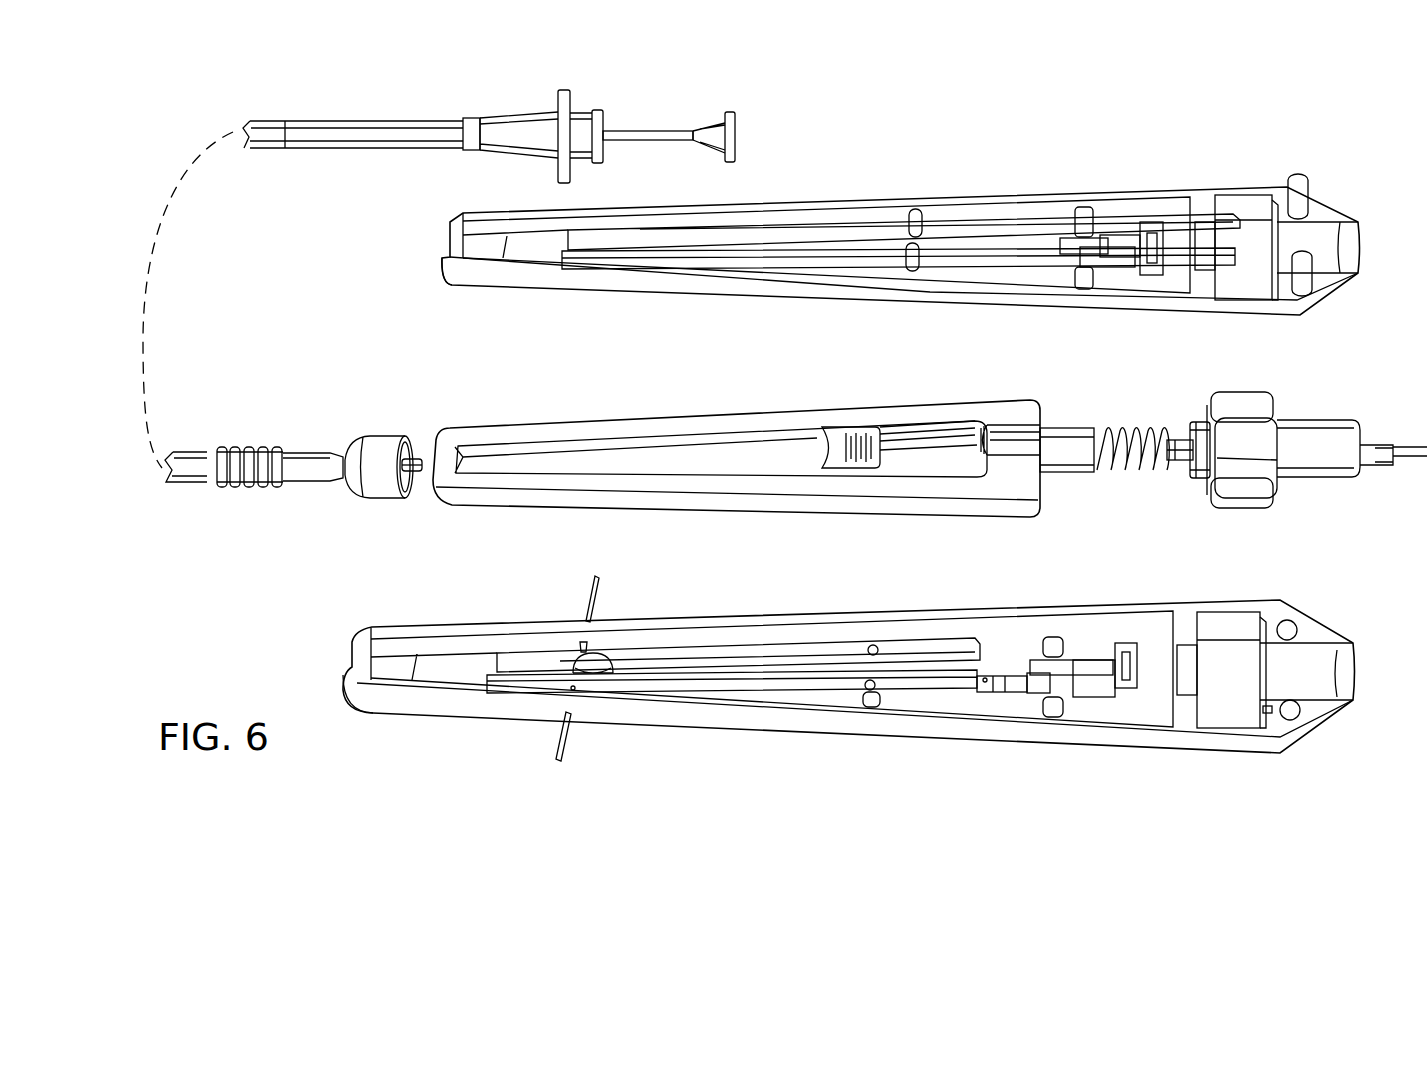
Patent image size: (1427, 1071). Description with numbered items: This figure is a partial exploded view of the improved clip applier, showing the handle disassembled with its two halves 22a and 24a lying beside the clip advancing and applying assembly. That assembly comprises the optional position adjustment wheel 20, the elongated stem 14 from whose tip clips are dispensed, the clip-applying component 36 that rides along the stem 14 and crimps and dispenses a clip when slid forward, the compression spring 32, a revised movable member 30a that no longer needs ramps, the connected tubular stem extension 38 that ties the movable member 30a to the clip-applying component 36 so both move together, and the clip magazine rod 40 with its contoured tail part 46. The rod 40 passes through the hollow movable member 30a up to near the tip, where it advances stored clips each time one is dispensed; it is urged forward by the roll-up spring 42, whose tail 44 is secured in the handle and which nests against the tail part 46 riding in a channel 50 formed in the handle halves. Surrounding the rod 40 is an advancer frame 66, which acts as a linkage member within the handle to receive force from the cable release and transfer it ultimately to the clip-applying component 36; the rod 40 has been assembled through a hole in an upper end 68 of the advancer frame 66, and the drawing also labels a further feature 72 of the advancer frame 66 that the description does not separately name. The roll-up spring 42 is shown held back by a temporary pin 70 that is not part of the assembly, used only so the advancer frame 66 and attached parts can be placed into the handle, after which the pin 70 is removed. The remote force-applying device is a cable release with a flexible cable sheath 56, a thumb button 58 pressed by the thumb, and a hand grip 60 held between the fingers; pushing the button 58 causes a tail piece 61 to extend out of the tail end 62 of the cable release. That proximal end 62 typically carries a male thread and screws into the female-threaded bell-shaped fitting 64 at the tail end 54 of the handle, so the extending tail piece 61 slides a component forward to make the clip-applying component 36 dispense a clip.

The stem 14 is at (1418, 440).
The rotation wheel 20 is at (1257, 483).
The handle half 22a is at (852, 678).
The handle half 24a is at (1108, 187).
The movable member 30a is at (1052, 433).
The compression coil spring 32 is at (1127, 470).
The clip-applying component 36 is at (1403, 443).
The tubular stem extension 38 is at (1145, 440).
The clip magazine rod 40 is at (915, 445).
The roll-up spring 42 is at (608, 660).
The tail 44 is at (1013, 676).
The contoured tail part 46 is at (848, 442).
The channel 50 is at (745, 663).
The tail end 54 is at (456, 272).
The flexible cable sheath 56 is at (267, 141).
The thumb button 58 is at (708, 128).
The hand grip 60 is at (560, 112).
The tail piece 61 is at (420, 458).
The tail end 62 is at (297, 457).
The bell-shaped fitting 64 is at (388, 440).
The advancer frame 66 is at (736, 461).
The upper end 68 is at (1010, 438).
The temporary pin 70 is at (565, 738).
The channel 72 is at (668, 458).